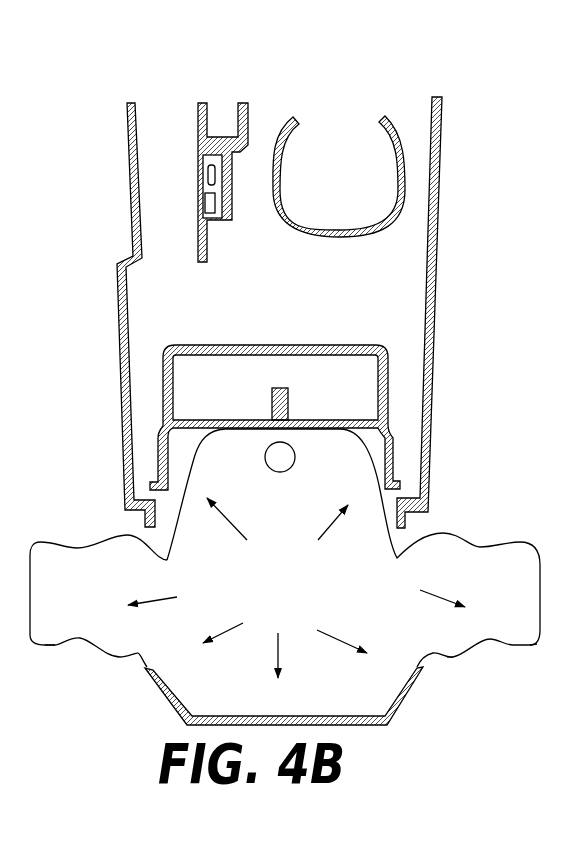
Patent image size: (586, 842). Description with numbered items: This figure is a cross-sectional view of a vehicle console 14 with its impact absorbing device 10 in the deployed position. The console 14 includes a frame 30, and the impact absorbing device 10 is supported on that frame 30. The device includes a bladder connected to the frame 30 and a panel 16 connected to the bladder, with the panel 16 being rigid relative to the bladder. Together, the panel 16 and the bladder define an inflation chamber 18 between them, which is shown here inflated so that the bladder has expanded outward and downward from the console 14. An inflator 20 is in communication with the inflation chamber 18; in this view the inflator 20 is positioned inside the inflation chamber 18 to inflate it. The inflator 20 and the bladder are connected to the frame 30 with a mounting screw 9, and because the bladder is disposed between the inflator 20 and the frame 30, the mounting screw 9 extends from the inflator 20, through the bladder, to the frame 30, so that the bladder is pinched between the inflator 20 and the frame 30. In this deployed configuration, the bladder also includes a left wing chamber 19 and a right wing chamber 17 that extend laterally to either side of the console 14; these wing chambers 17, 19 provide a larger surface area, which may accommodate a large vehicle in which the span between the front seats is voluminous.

The mounting screw 9 is at (288, 398).
The impact absorbing device 10 is at (478, 528).
The vehicle console 14 is at (437, 322).
The panel 16 is at (402, 712).
The right wing chamber 17 is at (532, 648).
The inflation chamber 18 is at (403, 658).
The left wing chamber 19 is at (53, 643).
The inflator 20 is at (290, 470).
The frame 30 is at (393, 437).